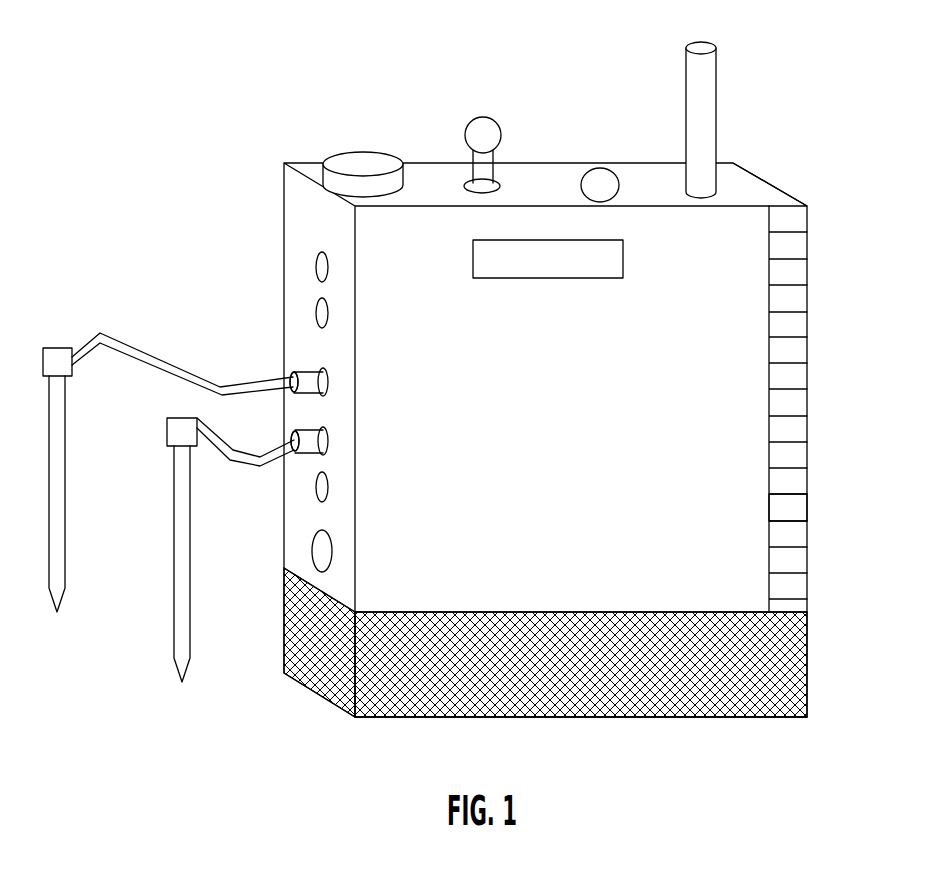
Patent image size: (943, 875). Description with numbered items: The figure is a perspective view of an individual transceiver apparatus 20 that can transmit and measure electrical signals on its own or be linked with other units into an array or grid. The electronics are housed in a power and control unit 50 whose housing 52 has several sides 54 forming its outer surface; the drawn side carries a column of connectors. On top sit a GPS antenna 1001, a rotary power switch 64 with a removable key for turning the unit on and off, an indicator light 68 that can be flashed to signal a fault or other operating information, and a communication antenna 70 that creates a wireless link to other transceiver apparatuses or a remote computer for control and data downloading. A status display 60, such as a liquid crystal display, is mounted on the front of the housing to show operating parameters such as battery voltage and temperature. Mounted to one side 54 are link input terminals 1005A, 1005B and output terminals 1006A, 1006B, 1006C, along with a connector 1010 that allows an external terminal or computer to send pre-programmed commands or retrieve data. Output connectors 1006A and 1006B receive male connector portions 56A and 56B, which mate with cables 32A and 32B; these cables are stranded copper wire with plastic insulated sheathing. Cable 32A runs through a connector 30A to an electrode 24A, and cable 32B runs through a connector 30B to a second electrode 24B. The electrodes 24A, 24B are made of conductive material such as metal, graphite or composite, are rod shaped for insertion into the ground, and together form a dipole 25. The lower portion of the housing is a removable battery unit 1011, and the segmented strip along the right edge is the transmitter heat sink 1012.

The transceiver apparatus 20 is at (212, 72).
The electrode 24A is at (65, 503).
The second electrode 24B is at (174, 645).
The dipole 25 is at (97, 625).
The connector 30A is at (57, 348).
The connector 30B is at (167, 430).
The cable 32A is at (132, 342).
The cable 32B is at (210, 415).
The power and control unit 50 is at (565, 495).
The housing 52 is at (775, 188).
The side 54 is at (743, 367).
The male connector portion 56A is at (295, 372).
The male connector portion 56B is at (307, 433).
The status display 60 is at (512, 278).
The power switch 64 is at (483, 118).
The indicator light 68 is at (598, 168).
The communication antenna 70 is at (716, 92).
The GPS antenna 1001 is at (359, 157).
The link input terminal 1005A is at (315, 263).
The link input terminal 1005B is at (315, 312).
The output terminal 1006A is at (323, 368).
The output terminal 1006B is at (328, 443).
The output terminal 1006C is at (315, 490).
The connector 1010 is at (312, 553).
The removable battery unit 1011 is at (580, 700).
The transmitter heat sink 1012 is at (793, 503).